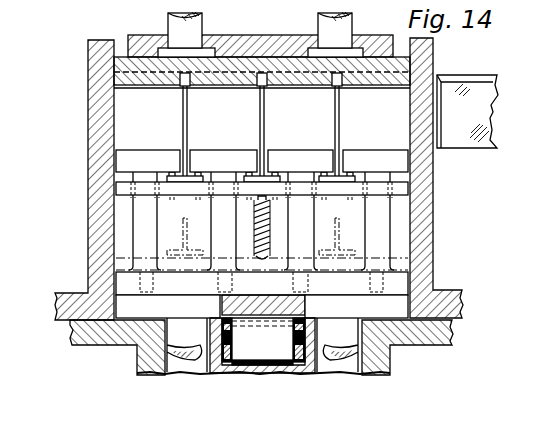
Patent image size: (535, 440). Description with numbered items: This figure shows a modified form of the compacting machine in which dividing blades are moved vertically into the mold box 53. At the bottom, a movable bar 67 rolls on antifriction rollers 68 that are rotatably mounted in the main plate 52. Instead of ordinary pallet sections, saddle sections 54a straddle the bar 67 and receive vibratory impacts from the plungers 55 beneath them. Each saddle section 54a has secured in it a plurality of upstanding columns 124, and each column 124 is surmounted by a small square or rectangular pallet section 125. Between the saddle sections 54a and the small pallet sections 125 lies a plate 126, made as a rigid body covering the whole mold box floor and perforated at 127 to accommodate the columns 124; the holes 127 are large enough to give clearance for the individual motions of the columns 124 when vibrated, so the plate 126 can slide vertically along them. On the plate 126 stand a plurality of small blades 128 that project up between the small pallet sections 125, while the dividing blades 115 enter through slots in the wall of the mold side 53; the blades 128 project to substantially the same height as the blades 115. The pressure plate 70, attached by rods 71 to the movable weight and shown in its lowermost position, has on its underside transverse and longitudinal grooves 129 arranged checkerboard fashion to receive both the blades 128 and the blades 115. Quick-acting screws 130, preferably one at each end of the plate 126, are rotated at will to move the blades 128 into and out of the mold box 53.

The main plate 52 is at (70, 340).
The mold box 53 is at (90, 93).
The saddle section 54a is at (400, 270).
The plunger 55 is at (175, 343).
The movable bar 67 is at (246, 312).
The antifriction roller 68 is at (286, 343).
The pressure plate 70 is at (114, 60).
The rod 71 is at (204, 26).
The dividing blade 115 is at (497, 97).
The upstanding column 124 is at (133, 236).
The small pallet section 125 is at (160, 152).
The plate 126 is at (118, 189).
The perforation 127 is at (130, 196).
The small blade 128 is at (233, 130).
The groove 129 is at (180, 84).
The screw 130 is at (268, 236).